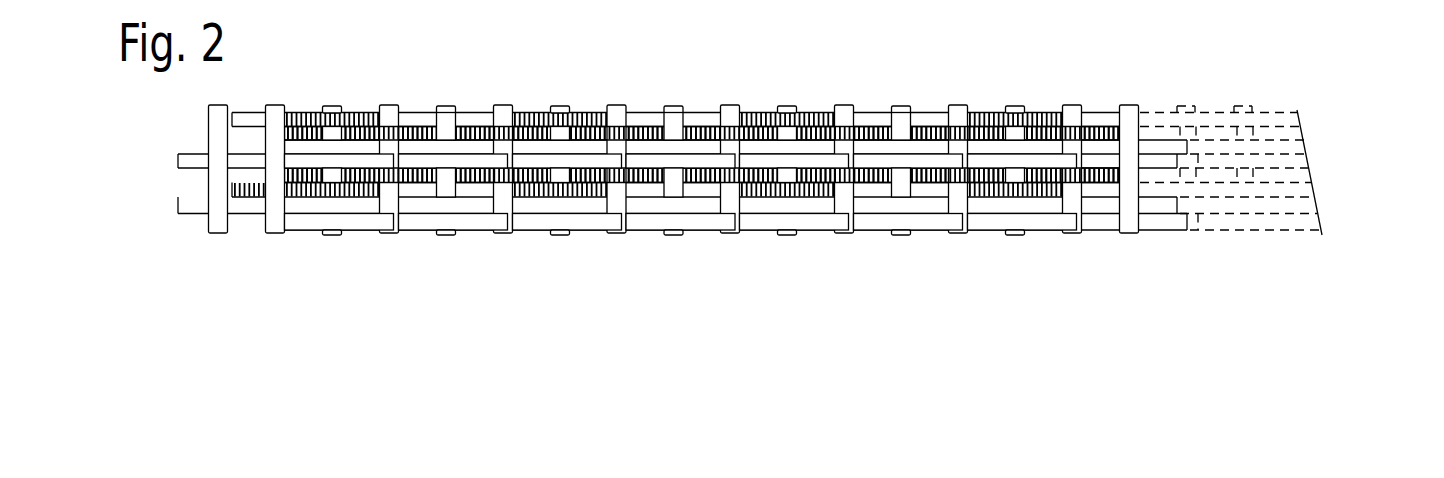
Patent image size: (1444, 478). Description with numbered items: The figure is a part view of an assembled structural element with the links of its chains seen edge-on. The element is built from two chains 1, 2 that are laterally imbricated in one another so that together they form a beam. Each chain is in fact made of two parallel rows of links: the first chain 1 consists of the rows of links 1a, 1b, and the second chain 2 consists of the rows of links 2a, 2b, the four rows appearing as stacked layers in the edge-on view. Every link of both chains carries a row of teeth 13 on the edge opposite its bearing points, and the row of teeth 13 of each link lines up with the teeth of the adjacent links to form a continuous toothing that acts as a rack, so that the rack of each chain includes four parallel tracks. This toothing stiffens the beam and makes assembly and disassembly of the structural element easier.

The chain 1 is at (812, 167).
The row of links of the first chain 1a is at (810, 87).
The row of links of the first chain 1b is at (1307, 178).
The chain 2 is at (800, 133).
The row of links of the second chain 2a is at (1298, 152).
The row of links of the second chain 2b is at (1313, 213).
The row of teeth 13 is at (848, 112).